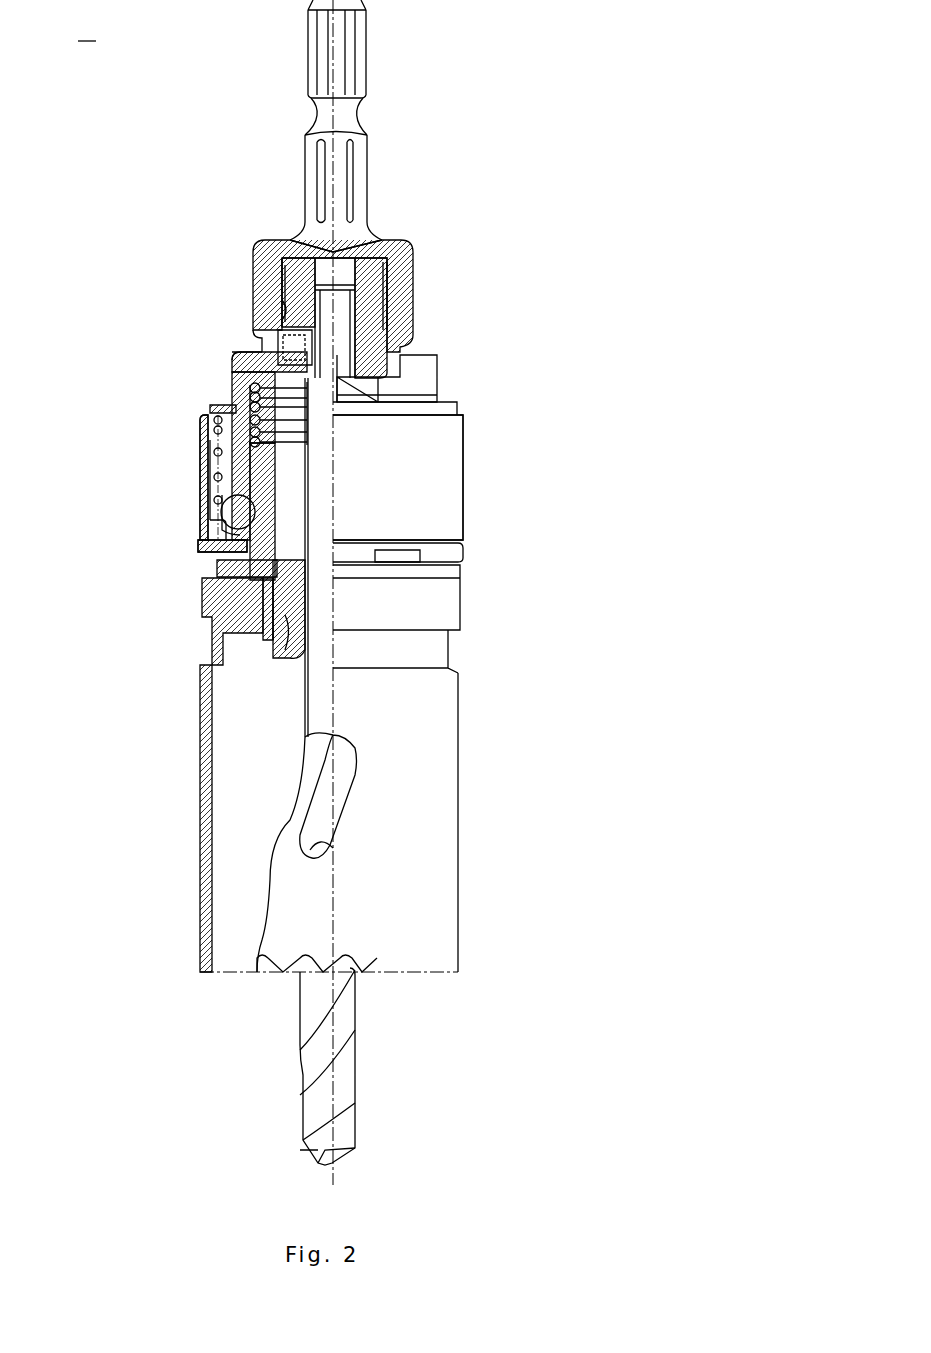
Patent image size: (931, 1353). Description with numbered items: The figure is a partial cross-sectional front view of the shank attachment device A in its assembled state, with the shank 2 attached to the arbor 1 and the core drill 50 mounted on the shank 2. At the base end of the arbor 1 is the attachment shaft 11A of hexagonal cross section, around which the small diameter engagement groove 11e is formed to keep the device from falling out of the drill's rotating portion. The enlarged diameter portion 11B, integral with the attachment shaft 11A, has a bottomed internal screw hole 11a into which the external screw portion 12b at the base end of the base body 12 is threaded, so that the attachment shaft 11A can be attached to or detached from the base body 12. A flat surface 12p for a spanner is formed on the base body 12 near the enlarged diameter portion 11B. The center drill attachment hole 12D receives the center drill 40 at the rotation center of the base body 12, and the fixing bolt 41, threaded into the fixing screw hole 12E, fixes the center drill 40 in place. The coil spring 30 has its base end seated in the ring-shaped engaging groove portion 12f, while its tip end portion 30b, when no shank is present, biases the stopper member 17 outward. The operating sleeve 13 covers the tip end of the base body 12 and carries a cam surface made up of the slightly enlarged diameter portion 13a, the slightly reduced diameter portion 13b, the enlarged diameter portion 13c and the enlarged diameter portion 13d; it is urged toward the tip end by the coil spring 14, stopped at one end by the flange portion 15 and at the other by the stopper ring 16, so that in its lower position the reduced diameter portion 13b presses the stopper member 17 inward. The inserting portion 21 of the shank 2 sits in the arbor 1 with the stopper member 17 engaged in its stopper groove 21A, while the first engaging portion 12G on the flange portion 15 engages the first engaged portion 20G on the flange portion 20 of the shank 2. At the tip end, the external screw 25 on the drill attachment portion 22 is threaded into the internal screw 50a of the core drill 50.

The shank attachment device A is at (145, 93).
The arbor 1 is at (418, 296).
The shank 2 is at (258, 563).
The attachment shaft 11A is at (307, 58).
The engagement groove 11e is at (350, 112).
The enlarged diameter portion 11B is at (255, 258).
The internal screw hole 11a is at (285, 283).
The base body 12 is at (420, 381).
The external screw portion 12b is at (283, 306).
The center drill attachment hole 12D is at (340, 245).
The fixing screw hole 12E is at (310, 312).
The engaging groove portion 12f is at (262, 356).
The flat surface 12p is at (372, 388).
The first engaging portion 12G is at (438, 553).
The operating sleeve 13 is at (457, 462).
The slightly enlarged diameter portion 13a is at (205, 530).
The slightly reduced diameter portion 13b is at (218, 512).
The enlarged diameter portion 13c is at (205, 476).
The enlarged diameter portion 13d is at (200, 435).
The coil spring 14 is at (215, 428).
The flange portion 15 is at (200, 565).
The stopper ring 16 is at (210, 408).
The stopper member 17 is at (245, 512).
The flange portion 20 is at (408, 600).
The first engaged portion 20G is at (385, 570).
The inserting portion 21 is at (262, 490).
The stopper groove 21A is at (262, 527).
The drill attachment portion 22 is at (290, 600).
The external screw 25 is at (188, 646).
The coil spring 30 is at (285, 440).
The tip end portion 30b is at (422, 413).
The center drill 40 is at (345, 1070).
The fixing bolt 41 is at (313, 353).
The core drill 50 is at (452, 835).
The internal screw 50a is at (288, 637).